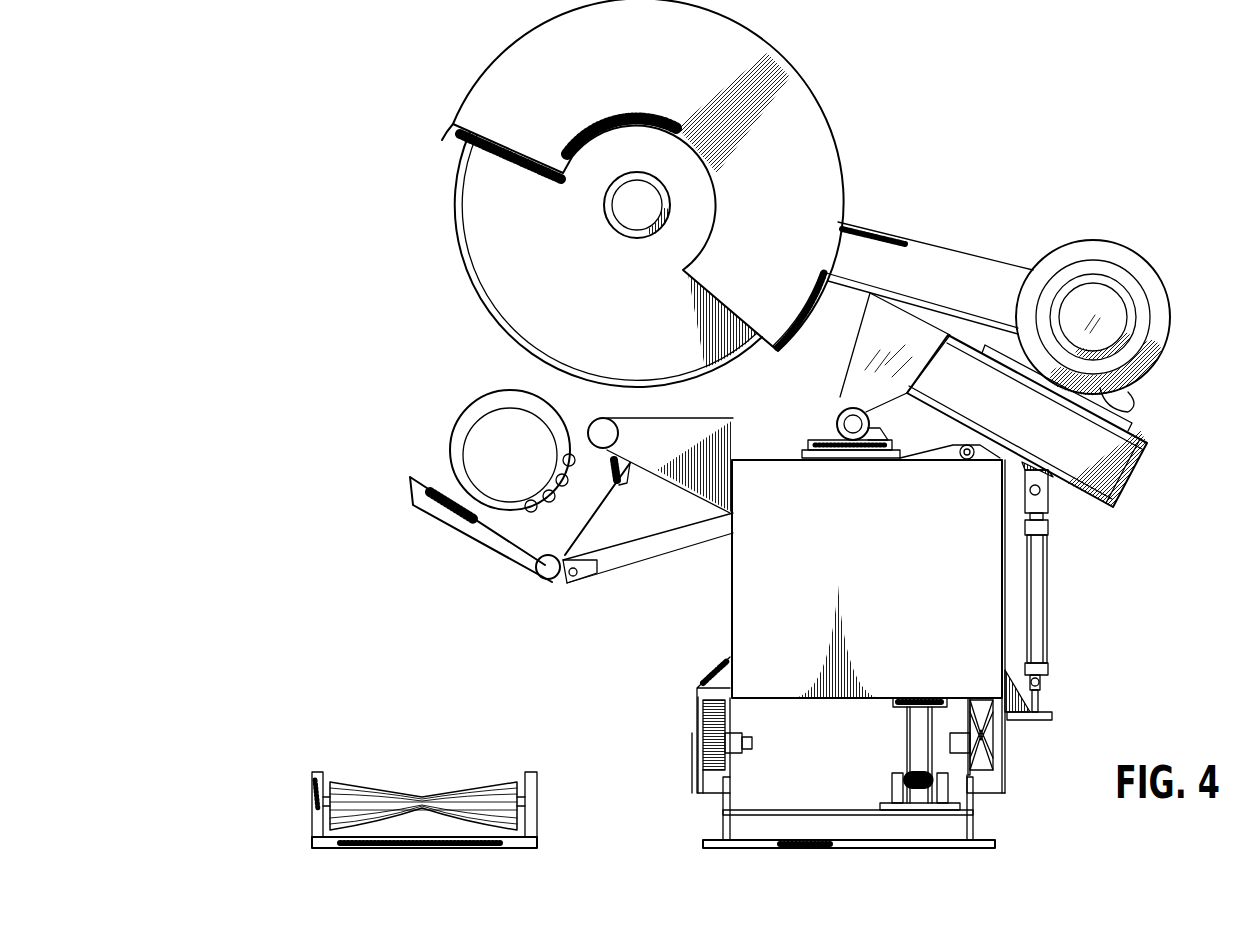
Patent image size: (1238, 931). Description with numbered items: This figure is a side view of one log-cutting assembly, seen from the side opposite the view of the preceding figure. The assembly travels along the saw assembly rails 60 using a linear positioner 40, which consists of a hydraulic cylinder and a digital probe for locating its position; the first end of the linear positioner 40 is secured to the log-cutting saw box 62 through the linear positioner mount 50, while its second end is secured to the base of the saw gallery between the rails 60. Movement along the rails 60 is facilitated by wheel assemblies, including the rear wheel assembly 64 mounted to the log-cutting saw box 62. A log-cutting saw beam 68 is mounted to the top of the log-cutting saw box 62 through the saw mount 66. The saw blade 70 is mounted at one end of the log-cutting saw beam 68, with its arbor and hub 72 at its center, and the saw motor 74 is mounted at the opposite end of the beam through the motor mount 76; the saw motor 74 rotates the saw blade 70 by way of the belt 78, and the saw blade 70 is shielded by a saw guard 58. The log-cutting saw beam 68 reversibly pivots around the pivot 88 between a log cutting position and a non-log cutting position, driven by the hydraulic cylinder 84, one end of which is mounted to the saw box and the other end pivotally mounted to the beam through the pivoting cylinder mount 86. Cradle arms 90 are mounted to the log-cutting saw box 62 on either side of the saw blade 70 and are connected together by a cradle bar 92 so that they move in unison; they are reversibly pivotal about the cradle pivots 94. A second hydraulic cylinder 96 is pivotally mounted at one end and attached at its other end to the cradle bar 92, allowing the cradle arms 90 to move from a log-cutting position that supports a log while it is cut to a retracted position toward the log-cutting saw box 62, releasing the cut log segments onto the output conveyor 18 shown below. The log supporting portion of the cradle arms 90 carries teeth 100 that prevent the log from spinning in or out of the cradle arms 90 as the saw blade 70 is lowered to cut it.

The output conveyor 18 is at (391, 764).
The linear positioner 40 is at (920, 767).
The linear positioner mount 50 is at (900, 708).
The saw guard 58 is at (478, 86).
The saw assembly rails 60 is at (720, 800).
The log-cutting saw box 62 is at (733, 587).
The wheel assembly 64 is at (686, 720).
The saw mount 66 is at (836, 422).
The log-cutting saw beam 68 is at (1098, 454).
The saw blade 70 is at (454, 198).
The hub 72 is at (603, 204).
The saw motor 74 is at (1117, 244).
The motor mount 76 is at (1122, 410).
The belt 78 is at (920, 244).
The hydraulic cylinder 84 is at (1043, 580).
The pivoting cylinder mount 86 is at (1054, 486).
The pivot 88 is at (838, 412).
The cradle arms 90 is at (443, 527).
The cradle bar 92 is at (548, 580).
The cradle pivots 94 is at (608, 419).
The hydraulic cylinder 96 is at (677, 547).
The teeth 100 is at (556, 514).